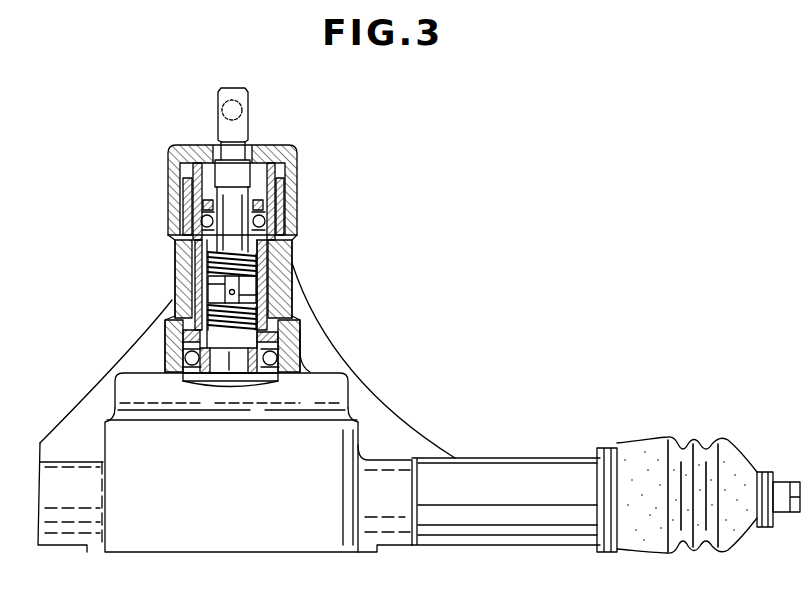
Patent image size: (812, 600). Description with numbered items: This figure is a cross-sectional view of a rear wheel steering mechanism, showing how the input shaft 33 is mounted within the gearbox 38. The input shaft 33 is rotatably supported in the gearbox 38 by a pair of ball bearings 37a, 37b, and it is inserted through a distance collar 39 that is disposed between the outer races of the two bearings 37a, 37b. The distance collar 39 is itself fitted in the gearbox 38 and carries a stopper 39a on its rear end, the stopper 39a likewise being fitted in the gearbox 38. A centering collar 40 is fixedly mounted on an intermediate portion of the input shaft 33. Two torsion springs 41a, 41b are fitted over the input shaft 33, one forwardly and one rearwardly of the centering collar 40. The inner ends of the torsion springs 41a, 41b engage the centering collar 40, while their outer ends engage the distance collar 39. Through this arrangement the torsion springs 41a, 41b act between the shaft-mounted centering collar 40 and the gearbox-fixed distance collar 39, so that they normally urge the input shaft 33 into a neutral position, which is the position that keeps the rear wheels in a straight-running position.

The input shaft 33 is at (243, 123).
The ball bearing 37a is at (268, 215).
The ball bearing 37b is at (282, 357).
The gearbox 38 is at (350, 423).
The distance collar 39 is at (258, 262).
The stopper 39a is at (300, 308).
The centering collar 40 is at (250, 285).
The torsion spring 41a is at (207, 267).
The torsion spring 41b is at (210, 320).